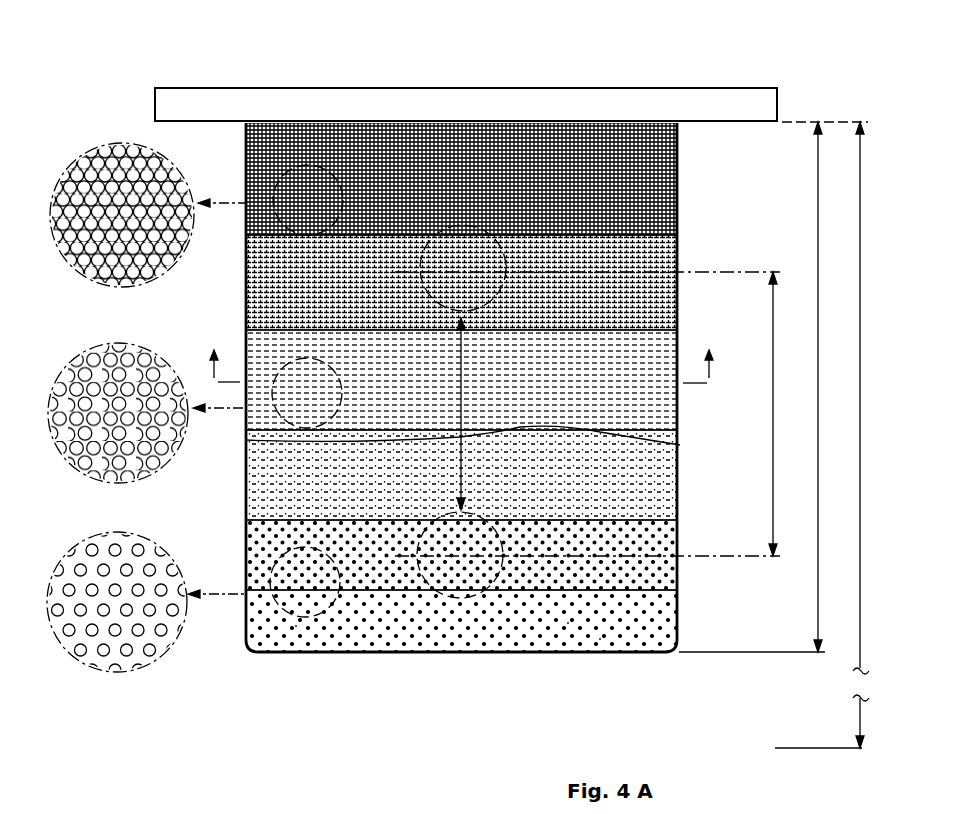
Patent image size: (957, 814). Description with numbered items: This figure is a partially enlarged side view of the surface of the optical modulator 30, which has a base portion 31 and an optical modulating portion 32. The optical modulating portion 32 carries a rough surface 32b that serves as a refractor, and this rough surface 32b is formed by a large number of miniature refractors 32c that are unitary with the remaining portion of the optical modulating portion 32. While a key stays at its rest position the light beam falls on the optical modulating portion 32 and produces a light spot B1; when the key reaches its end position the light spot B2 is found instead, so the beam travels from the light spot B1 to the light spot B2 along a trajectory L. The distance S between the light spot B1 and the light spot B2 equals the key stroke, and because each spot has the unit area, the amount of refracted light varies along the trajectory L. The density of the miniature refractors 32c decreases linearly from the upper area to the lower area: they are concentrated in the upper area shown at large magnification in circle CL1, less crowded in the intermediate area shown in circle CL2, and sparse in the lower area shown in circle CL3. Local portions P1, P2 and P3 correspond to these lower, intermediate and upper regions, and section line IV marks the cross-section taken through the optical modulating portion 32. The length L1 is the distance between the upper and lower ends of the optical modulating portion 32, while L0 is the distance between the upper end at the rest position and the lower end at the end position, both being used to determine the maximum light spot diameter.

The optical modulator 30 is at (373, 658).
The base portion 31 is at (716, 86).
The optical modulating portion 32 is at (684, 298).
The rough surface 32b is at (455, 643).
The miniature refractors 32c is at (296, 625).
The light spot B1 is at (500, 512).
The light spot B2 is at (500, 240).
The trajectory L is at (680, 445).
The distance L0 is at (822, 435).
The length L1 is at (773, 387).
The distance S is at (587, 414).
The low density portion P1 is at (246, 632).
The medium density portion P2 is at (248, 440).
The high density portion P3 is at (248, 243).
The circle CL1 is at (170, 160).
The circle CL2 is at (130, 343).
The circle CL3 is at (182, 532).
The section line IV is at (456, 352).